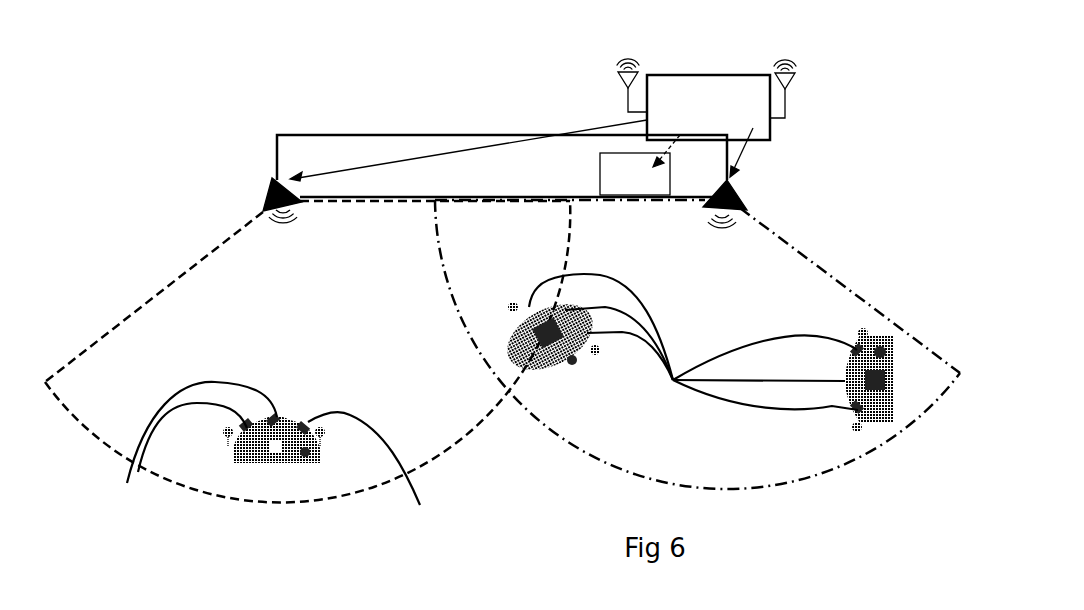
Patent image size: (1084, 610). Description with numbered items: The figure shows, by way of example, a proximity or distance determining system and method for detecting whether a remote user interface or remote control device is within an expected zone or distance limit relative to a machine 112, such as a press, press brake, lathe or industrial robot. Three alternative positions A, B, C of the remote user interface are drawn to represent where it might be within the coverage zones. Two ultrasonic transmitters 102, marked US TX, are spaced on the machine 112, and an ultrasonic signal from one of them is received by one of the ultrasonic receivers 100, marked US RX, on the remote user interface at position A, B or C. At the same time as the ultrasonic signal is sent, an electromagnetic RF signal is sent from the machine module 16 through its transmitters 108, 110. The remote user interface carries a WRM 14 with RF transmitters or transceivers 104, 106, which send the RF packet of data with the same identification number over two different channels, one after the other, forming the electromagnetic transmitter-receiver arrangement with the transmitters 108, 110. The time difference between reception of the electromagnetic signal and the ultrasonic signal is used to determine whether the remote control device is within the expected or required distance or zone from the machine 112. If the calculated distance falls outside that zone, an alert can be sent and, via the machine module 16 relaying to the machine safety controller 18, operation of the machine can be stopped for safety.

The WRM 14 is at (248, 458).
The machine module 16 is at (662, 115).
The machine safety controller 18 is at (640, 165).
The ultrasonic receiver 100 is at (474, 406).
The ultrasonic transmitter 102 is at (270, 183).
The RF transmitter/transceiver 104 is at (227, 443).
The RF transmitter/transceiver 106 is at (323, 448).
The machine module transmitter 108 is at (648, 70).
The machine module transmitter 110 is at (772, 73).
The machine 112 is at (468, 150).
The position A is at (262, 460).
The position B is at (550, 350).
The position C is at (882, 413).